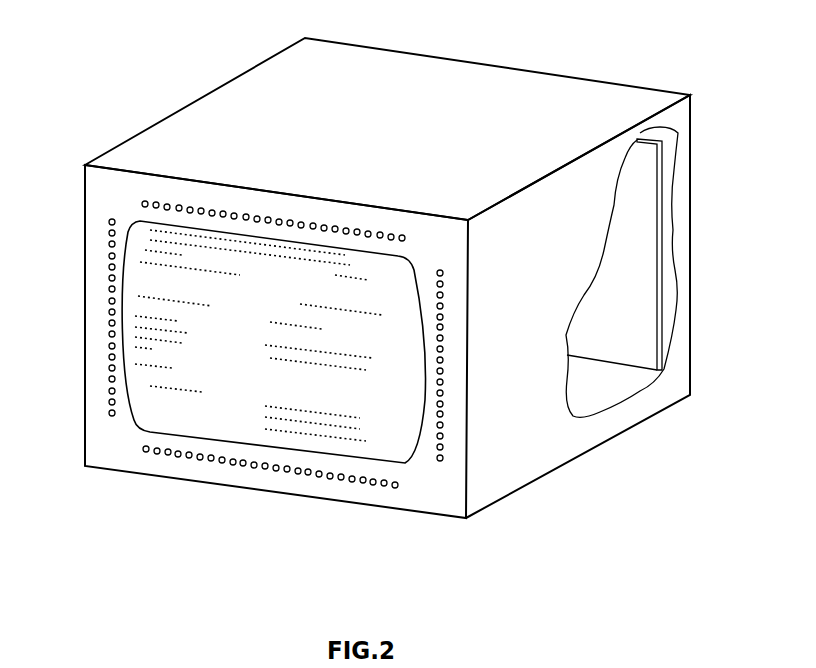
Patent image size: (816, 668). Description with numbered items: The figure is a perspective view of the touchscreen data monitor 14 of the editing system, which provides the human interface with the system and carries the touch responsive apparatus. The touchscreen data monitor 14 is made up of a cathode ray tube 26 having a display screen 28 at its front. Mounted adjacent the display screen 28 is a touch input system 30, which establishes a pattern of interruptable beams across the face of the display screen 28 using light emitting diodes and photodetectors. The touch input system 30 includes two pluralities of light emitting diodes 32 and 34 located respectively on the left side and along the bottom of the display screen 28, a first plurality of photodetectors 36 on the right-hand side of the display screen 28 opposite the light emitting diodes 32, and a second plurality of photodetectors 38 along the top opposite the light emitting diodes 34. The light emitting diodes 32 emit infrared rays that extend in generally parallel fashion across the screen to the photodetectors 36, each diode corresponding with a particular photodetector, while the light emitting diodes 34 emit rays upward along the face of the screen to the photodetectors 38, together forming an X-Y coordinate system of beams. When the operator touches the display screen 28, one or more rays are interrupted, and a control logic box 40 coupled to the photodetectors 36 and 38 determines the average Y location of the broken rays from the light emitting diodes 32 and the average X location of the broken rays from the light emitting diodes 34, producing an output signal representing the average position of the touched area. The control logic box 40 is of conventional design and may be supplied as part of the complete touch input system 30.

The touchscreen data monitor 14 is at (387, 271).
The cathode ray tube 26 is at (397, 72).
The display screen 28 is at (391, 443).
The touch input system 30 is at (91, 334).
The light emitting diodes 32 is at (113, 315).
The light emitting diodes 34 is at (178, 452).
The photodetectors 36 is at (442, 353).
The photodetectors 38 is at (271, 212).
The control logic box 40 is at (645, 273).